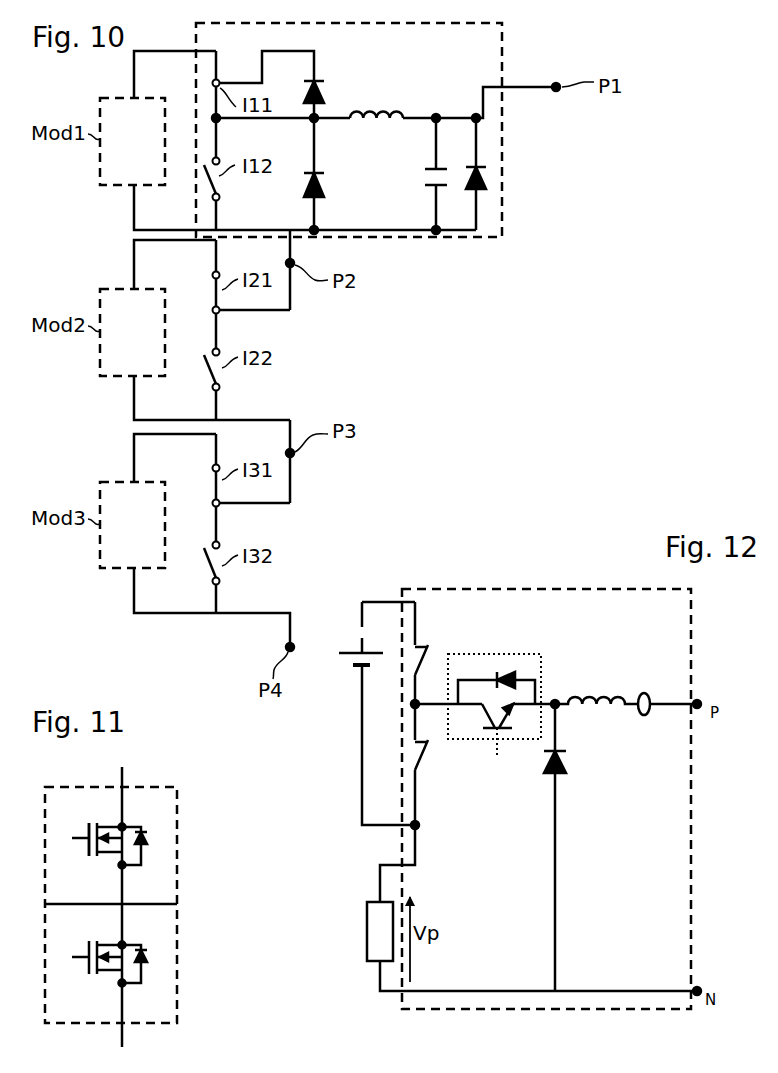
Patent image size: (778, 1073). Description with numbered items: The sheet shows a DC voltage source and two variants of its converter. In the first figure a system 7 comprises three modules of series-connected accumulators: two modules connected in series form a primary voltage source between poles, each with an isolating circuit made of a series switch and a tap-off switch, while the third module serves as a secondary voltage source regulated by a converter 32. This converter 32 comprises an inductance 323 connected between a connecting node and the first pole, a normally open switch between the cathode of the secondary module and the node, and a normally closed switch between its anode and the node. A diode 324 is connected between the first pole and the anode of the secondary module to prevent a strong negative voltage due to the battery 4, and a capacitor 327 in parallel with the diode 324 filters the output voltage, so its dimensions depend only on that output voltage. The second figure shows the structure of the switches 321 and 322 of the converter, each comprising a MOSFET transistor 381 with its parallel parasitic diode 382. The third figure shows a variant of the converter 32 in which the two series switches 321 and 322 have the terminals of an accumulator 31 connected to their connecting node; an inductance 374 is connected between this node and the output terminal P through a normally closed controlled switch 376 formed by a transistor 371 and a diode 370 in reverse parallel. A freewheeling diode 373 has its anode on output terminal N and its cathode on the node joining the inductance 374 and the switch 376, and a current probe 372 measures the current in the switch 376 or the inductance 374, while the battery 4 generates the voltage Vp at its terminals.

In FIG. 10, the converter 32 is at (347, 238).
In FIG. 12, the converter 32 is at (547, 1010).
In FIG. 10, the inductance 323 is at (398, 110).
In FIG. 10, the capacitor 327 is at (425, 168).
In FIG. 10, the diode 324 is at (481, 178).
In FIG. 10, the system 7 is at (399, 371).
In FIG. 11, the switch 321 is at (177, 845).
In FIG. 12, the switch 321 is at (428, 648).
In FIG. 11, the switch 322 is at (177, 965).
In FIG. 12, the switch 322 is at (428, 742).
In FIG. 11, the transistor 381 is at (92, 823).
In FIG. 11, the parallel parasitic diode 382 is at (137, 823).
In FIG. 12, the accumulator 31 is at (369, 667).
In FIG. 12, the battery 4 is at (367, 932).
In FIG. 12, the diode 370 is at (503, 669).
In FIG. 12, the transistor 371 is at (512, 728).
In FIG. 12, the controlled switch 376 is at (546, 693).
In FIG. 12, the freewheeling diode 373 is at (561, 762).
In FIG. 12, the inductance 374 is at (618, 692).
In FIG. 12, the current probe 372 is at (648, 716).